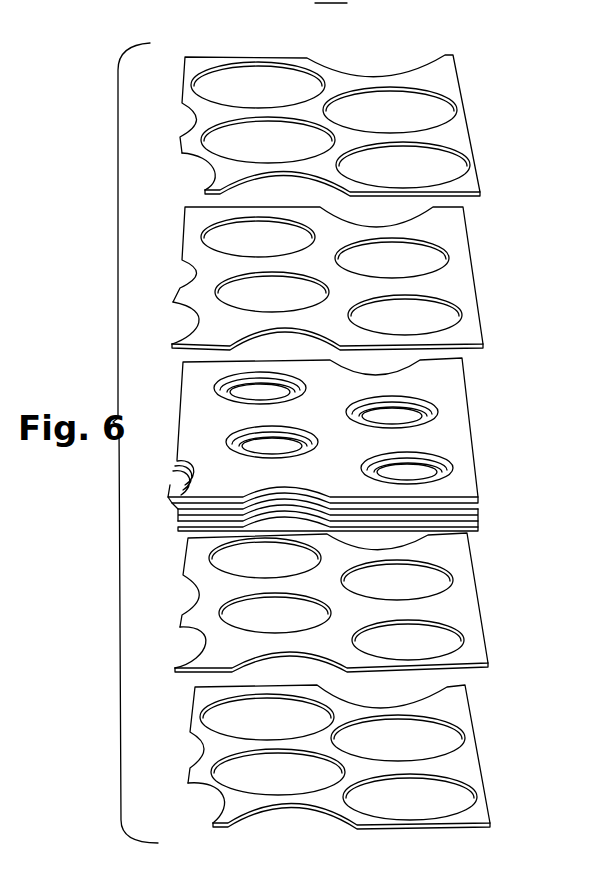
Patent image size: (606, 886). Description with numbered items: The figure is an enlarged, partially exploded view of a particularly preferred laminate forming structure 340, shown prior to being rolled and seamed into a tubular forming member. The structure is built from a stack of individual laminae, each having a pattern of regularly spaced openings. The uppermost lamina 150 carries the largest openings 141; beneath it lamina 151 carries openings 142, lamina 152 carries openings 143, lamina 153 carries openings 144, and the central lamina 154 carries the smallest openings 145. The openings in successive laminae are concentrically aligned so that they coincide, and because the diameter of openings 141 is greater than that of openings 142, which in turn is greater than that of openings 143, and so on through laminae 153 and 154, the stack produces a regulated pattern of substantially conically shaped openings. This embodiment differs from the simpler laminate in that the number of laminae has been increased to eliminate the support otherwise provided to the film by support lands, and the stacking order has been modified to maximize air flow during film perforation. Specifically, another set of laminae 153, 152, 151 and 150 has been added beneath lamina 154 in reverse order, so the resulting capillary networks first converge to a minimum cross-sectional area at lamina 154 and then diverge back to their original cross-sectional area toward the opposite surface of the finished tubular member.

The laminate forming structure 340 is at (407, 48).
The openings in lamina 150 141 is at (377, 102).
The openings in lamina 151 142 is at (420, 253).
The openings in lamina 152 143 is at (403, 400).
The openings in lamina 153 144 is at (417, 405).
The openings in lamina 154 145 is at (420, 415).
The lamina 150 is at (230, 167).
The lamina 151 is at (230, 318).
The lamina 152 is at (480, 497).
The lamina 153 is at (478, 507).
The lamina 154 is at (478, 514).